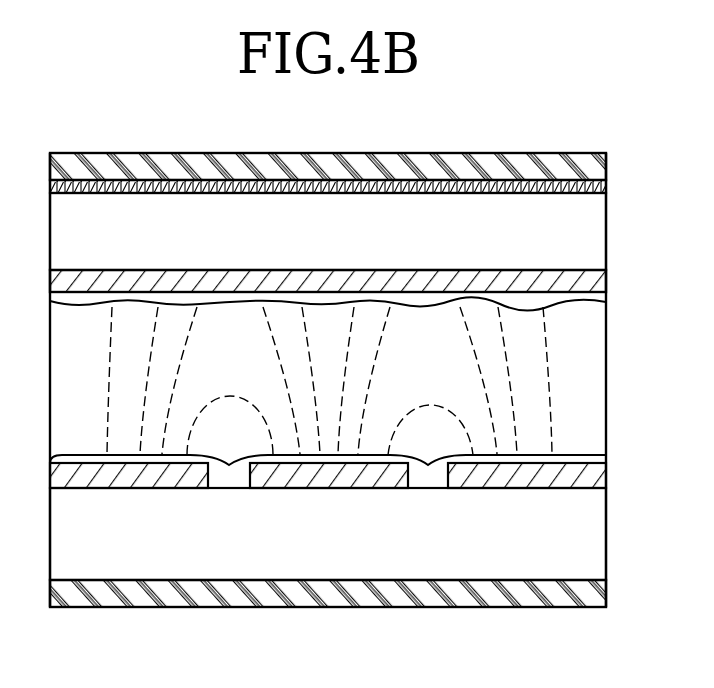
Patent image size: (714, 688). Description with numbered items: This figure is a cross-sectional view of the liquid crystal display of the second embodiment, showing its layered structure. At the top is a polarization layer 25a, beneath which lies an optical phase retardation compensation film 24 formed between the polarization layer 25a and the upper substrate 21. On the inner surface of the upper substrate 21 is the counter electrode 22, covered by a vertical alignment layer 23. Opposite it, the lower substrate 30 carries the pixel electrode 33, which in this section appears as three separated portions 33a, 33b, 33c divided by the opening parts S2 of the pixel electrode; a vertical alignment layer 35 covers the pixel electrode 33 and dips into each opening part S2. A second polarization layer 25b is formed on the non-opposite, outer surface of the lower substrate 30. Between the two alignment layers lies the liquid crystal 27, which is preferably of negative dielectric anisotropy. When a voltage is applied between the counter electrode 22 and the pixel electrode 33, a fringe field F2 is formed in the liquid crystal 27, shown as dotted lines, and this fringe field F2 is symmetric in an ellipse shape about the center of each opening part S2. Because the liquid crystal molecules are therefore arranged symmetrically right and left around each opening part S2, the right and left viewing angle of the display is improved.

The polarization layer 25a is at (607, 163).
The optical phase retardation compensation film 24 is at (607, 188).
The upper substrate 21 is at (607, 226).
The counter electrode 22 is at (607, 285).
The vertical alignment layer 23 is at (605, 305).
The liquid crystal 27 is at (602, 370).
The fringe field F2 is at (575, 390).
The opening part S2 is at (233, 464).
The vertical alignment layer 35 is at (592, 458).
The pixel electrode 33 is at (370, 554).
The pixel electrode portion 33a is at (133, 485).
The pixel electrode portion 33b is at (333, 485).
The pixel electrode portion 33c is at (522, 485).
The lower substrate 30 is at (607, 540).
The polarization layer 25b is at (607, 592).